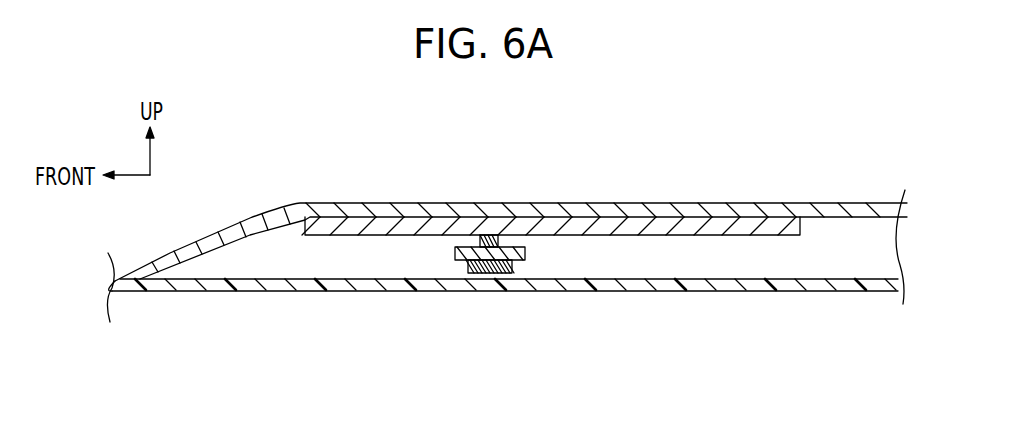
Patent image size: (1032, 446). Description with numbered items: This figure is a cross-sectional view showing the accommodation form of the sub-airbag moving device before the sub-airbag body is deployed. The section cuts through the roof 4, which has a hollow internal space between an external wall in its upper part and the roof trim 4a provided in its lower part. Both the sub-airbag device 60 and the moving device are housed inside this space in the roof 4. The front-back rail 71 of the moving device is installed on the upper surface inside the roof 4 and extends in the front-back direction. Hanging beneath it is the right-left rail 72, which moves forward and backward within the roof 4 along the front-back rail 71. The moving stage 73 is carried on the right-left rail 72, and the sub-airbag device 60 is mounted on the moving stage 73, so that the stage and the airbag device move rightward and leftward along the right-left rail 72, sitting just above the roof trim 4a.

The roof 4 is at (850, 248).
The roof trim 4a is at (841, 291).
The sub-airbag device 60 is at (468, 264).
The front-back rail 71 is at (665, 222).
The right-left rail 72 is at (483, 235).
The moving stage 73 is at (525, 252).